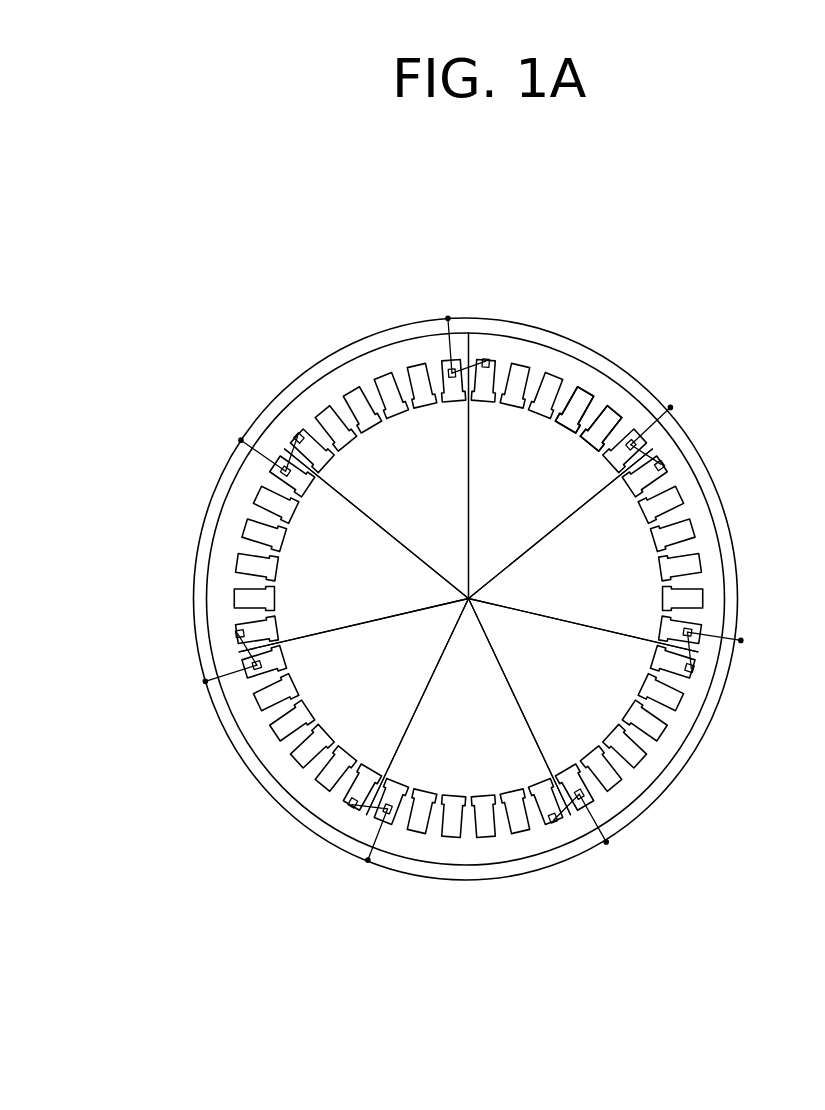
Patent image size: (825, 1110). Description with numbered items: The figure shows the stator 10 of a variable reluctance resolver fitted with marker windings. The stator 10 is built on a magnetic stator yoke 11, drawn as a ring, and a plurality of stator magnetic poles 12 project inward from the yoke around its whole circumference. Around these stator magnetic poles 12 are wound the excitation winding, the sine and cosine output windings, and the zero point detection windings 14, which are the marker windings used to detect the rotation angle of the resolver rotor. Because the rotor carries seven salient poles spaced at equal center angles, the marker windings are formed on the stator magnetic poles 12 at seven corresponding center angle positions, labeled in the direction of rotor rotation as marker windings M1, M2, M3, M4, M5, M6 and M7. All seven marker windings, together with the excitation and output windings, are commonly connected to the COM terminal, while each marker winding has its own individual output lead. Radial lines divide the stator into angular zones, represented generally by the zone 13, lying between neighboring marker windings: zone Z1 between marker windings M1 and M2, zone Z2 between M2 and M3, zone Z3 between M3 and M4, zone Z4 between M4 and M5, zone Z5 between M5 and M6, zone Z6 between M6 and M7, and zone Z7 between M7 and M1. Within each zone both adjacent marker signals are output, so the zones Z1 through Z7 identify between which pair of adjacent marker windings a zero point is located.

The stator 10 is at (466, 566).
The magnetic stator yoke 11 is at (538, 354).
The stator magnetic poles 12 is at (562, 382).
The zone 13 is at (523, 487).
The zero point detection windings 14 is at (660, 452).
The marker winding M1 is at (486, 361).
The marker winding M2 is at (697, 419).
The marker winding M3 is at (691, 669).
The marker winding M4 is at (554, 820).
The marker winding M5 is at (352, 805).
The marker winding M6 is at (238, 634).
The marker winding M7 is at (298, 437).
The COM terminal COM is at (819, 660).
The zone Z1 is at (561, 466).
The zone Z2 is at (583, 550).
The zone Z3 is at (583, 707).
The zone Z4 is at (468, 707).
The zone Z5 is at (353, 707).
The zone Z6 is at (353, 550).
The zone Z7 is at (377, 466).